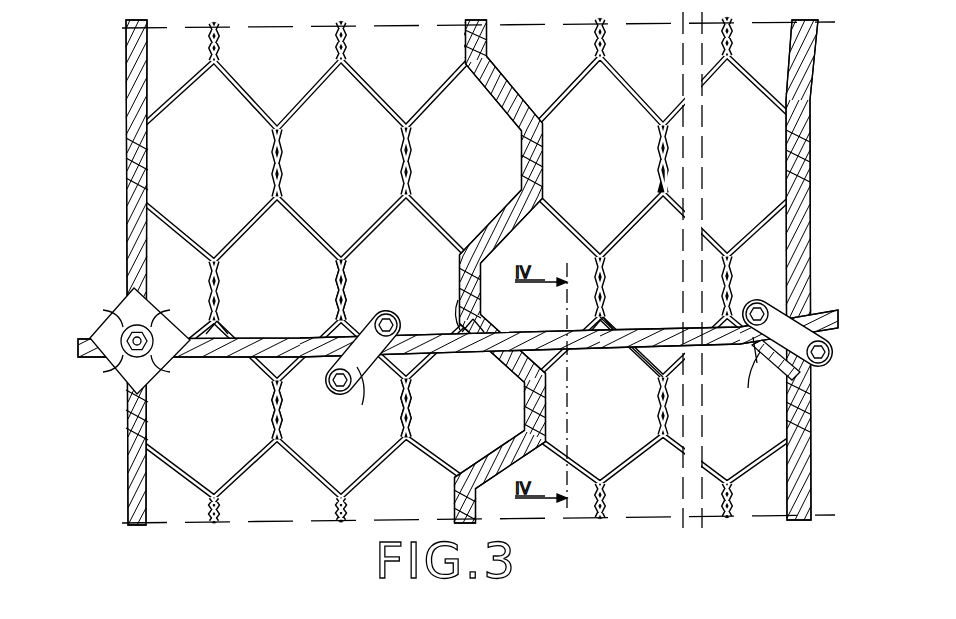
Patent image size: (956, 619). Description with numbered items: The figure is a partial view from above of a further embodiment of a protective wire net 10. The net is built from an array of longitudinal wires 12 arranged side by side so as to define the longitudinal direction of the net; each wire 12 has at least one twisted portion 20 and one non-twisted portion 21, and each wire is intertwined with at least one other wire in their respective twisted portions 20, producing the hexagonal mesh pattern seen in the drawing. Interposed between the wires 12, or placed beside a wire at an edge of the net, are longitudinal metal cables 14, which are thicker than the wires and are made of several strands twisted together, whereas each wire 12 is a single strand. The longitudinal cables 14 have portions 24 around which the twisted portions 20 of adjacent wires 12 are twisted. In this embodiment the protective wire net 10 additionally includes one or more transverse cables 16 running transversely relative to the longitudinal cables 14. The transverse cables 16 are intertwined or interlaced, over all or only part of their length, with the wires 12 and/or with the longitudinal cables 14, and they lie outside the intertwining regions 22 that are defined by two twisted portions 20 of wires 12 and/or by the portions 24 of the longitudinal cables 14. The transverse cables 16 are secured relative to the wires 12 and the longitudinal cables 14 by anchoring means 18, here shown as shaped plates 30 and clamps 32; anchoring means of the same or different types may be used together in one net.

The protective wire net 10 is at (107, 102).
The longitudinal wire 12 is at (247, 88).
The longitudinal metal cable 14 is at (148, 68).
The transverse cable 16 is at (276, 338).
The anchoring means 18 is at (767, 296).
The twisted portion 20 is at (272, 312).
The non-twisted portion 21 is at (612, 385).
The intertwining region 22 is at (352, 282).
The portion of longitudinal cable 24 is at (458, 308).
The shaped plate 30 is at (143, 293).
The clamp 32 is at (578, 374).